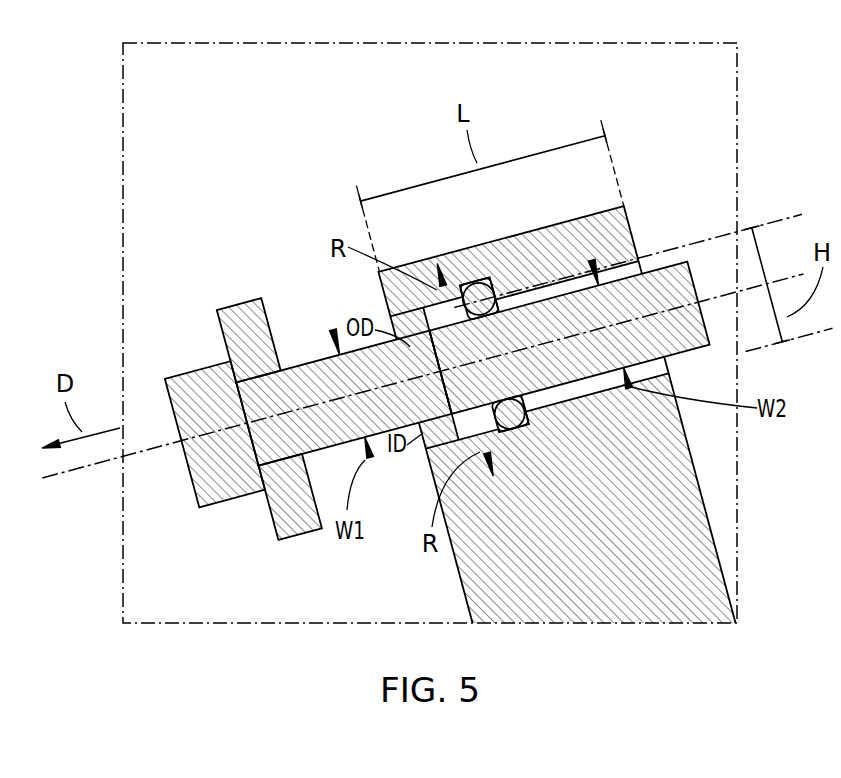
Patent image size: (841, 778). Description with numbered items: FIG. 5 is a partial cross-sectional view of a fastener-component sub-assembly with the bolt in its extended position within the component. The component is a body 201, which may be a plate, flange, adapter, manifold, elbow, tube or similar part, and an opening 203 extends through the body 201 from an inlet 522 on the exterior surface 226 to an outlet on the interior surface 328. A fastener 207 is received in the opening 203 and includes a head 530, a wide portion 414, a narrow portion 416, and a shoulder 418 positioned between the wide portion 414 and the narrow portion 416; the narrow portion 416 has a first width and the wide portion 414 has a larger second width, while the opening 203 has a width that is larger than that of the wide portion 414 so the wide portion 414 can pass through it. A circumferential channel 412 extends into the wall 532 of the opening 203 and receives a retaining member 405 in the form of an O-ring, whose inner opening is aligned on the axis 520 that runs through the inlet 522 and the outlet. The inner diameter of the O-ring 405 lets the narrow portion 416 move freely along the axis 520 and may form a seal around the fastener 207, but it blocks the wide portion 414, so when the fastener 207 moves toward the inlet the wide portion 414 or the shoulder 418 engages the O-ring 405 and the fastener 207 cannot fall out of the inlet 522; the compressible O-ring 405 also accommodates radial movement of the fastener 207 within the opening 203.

The body 201 is at (594, 593).
The opening 203 is at (437, 433).
The fastener 207 is at (182, 448).
The exterior surface 226 is at (458, 583).
The interior surface 328 is at (728, 582).
The retaining member 405 is at (464, 286).
The channel 412 is at (490, 283).
The wide portion 414 is at (690, 335).
The narrow portion 416 is at (312, 380).
The shoulder 418 is at (507, 303).
The axis 520 is at (92, 463).
The inlet 522 is at (440, 380).
The head 530 is at (260, 493).
The wall 532 is at (568, 283).